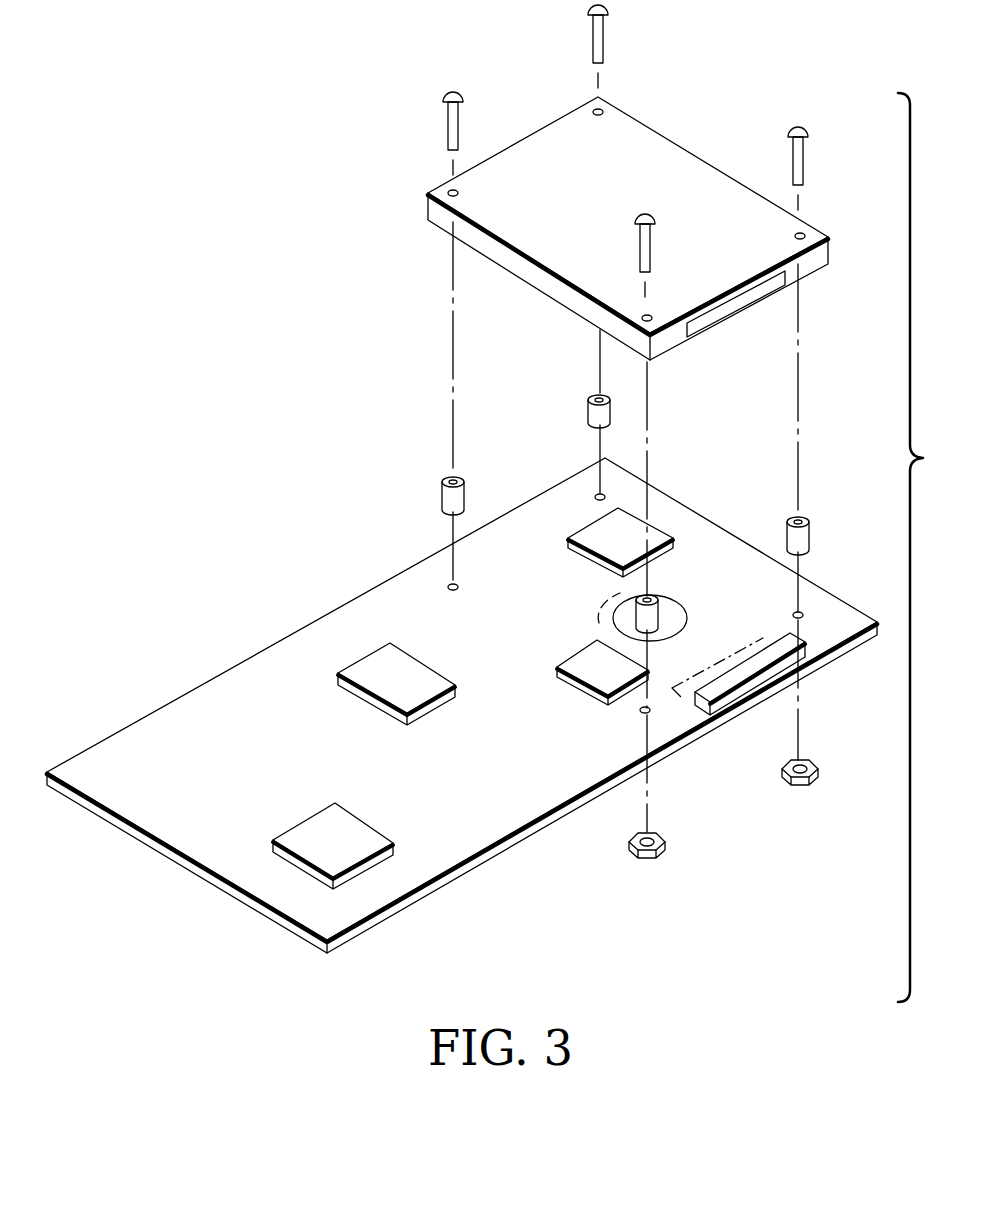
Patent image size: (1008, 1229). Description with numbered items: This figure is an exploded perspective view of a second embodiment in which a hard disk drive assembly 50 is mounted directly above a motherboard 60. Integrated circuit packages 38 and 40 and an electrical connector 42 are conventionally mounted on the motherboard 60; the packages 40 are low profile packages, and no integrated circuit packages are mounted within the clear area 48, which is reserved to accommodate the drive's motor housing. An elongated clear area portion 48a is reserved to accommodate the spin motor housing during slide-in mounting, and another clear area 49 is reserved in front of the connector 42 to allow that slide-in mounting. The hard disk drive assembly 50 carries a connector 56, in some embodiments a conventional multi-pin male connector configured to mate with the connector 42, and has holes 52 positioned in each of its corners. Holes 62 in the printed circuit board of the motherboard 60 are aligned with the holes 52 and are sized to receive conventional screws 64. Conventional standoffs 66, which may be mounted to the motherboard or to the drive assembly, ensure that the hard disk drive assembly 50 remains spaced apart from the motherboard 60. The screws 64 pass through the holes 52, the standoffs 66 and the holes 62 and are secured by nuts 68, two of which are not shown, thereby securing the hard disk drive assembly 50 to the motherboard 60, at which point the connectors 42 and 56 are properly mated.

The integrated circuit package 38 is at (380, 672).
The integrated circuit package 40 is at (635, 525).
The electrical connector 42 is at (775, 651).
The clear area 48 is at (672, 616).
The elongated clear area portion 48a is at (628, 590).
The clear area 49 is at (760, 641).
The hard disk drive assembly 50 is at (665, 147).
The holes 52 is at (603, 110).
The electrical connector 56 is at (707, 330).
The motherboard 60 is at (160, 822).
The holes 62 is at (600, 495).
The screws 64 is at (598, 37).
The standoffs 66 is at (592, 416).
The nuts 68 is at (650, 860).